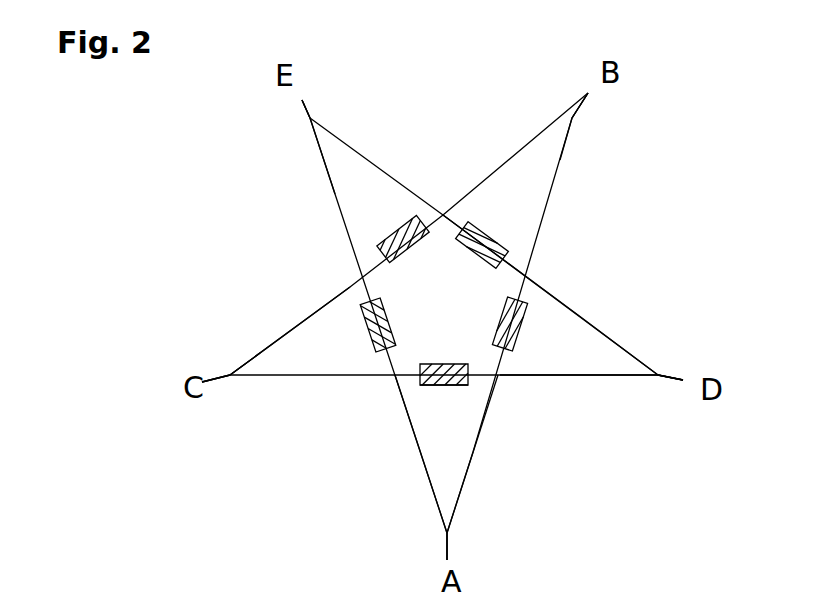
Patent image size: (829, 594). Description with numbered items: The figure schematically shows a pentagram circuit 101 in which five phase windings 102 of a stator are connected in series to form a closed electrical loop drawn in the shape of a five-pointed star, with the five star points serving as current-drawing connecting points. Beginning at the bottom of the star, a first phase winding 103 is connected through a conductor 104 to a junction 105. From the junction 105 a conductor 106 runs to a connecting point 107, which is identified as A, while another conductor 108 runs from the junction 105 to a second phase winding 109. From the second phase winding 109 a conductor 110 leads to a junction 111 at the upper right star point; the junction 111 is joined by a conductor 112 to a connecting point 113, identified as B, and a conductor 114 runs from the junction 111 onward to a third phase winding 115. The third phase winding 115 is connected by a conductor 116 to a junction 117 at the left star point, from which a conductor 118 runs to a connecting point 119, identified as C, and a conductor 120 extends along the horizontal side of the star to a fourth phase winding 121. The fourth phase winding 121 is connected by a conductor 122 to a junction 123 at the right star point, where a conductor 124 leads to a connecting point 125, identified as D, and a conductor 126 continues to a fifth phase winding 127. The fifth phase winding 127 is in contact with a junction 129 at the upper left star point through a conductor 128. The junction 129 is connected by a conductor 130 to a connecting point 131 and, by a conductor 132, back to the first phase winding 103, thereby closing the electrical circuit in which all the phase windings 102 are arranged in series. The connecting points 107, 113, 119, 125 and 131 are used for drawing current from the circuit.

The pentagram circuit 101 is at (275, 515).
The phase windings 102 is at (442, 335).
The first phase winding 103 is at (349, 331).
The conductor 104 is at (395, 454).
The junction 105 is at (399, 538).
The conductor 106 is at (497, 536).
The connecting point 107 is at (497, 553).
The conductor 108 is at (497, 454).
The second phase winding 109 is at (541, 331).
The conductor 110 is at (538, 313).
The junction 111 is at (611, 149).
The conductor 112 is at (627, 103).
The connecting point 113 is at (542, 78).
The conductor 114 is at (409, 234).
The third phase winding 115 is at (388, 222).
The conductor 116 is at (290, 320).
The junction 117 is at (217, 333).
The conductor 118 is at (242, 419).
The connecting point 119 is at (205, 425).
The conductor 120 is at (442, 409).
The fourth phase winding 121 is at (444, 419).
The conductor 122 is at (579, 411).
The junction 123 is at (654, 415).
The conductor 124 is at (670, 334).
The connecting point 125 is at (700, 341).
The conductor 126 is at (550, 295).
The fifth phase winding 127 is at (498, 224).
The conductor 128 is at (484, 241).
The junction 129 is at (374, 295).
The conductor 130 is at (326, 70).
The connecting point 131 is at (259, 126).
The conductor 132 is at (300, 172).